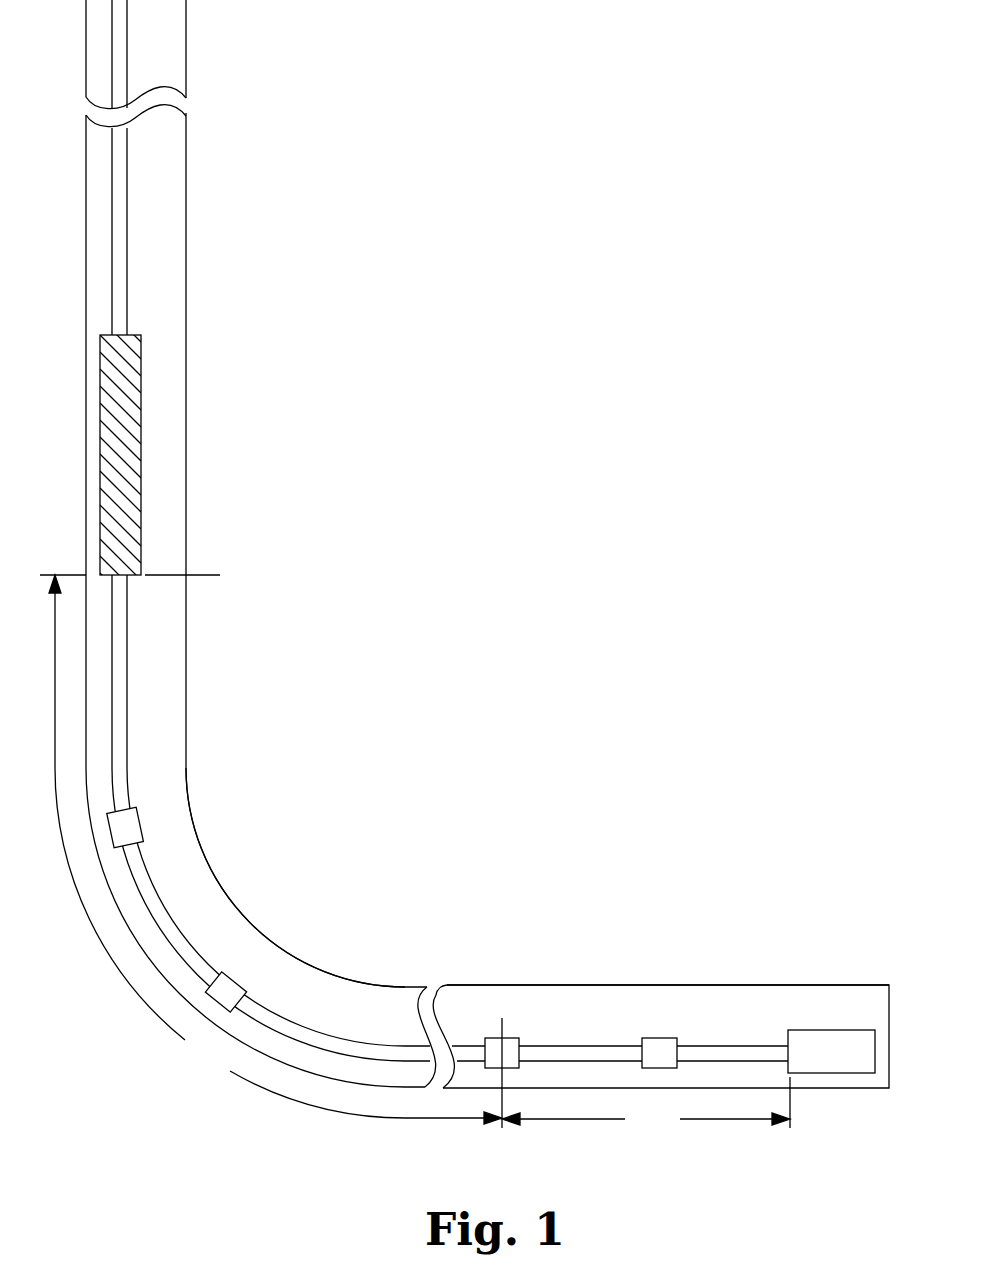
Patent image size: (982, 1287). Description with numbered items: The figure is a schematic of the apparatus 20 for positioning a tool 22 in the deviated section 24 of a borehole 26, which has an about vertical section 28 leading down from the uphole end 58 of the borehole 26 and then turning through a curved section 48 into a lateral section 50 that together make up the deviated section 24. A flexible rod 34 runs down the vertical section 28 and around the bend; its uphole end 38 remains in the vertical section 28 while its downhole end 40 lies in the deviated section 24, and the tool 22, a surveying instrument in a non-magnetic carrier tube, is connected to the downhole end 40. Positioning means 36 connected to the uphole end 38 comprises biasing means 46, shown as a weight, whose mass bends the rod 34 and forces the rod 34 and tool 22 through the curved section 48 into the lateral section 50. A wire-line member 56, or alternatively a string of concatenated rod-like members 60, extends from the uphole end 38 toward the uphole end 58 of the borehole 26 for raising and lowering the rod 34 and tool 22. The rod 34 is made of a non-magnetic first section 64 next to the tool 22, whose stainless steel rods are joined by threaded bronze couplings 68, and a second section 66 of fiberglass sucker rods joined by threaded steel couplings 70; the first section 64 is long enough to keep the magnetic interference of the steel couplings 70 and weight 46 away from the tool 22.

The apparatus 20 is at (328, 810).
The tool 22 is at (839, 1017).
The deviated section 24 is at (308, 600).
The borehole 26 is at (308, 600).
The vertical section 28 is at (175, 153).
The flexible rod 34 is at (340, 1022).
The positioning means 36 is at (220, 457).
The uphole end 38 is at (162, 623).
The downhole end 40 is at (730, 1018).
The biasing means 46 is at (160, 432).
The curved section 48 is at (227, 925).
The lateral section 50 is at (600, 1005).
The wire-line member 56 is at (222, 231).
The uphole end of the borehole 58 is at (153, 40).
The concatenated rod-like members 60 is at (128, 267).
The first section 64 is at (646, 1076).
The second section 66 is at (275, 849).
The threaded bronze couplings 68 is at (508, 1048).
The threaded steel couplings 70 is at (128, 827).